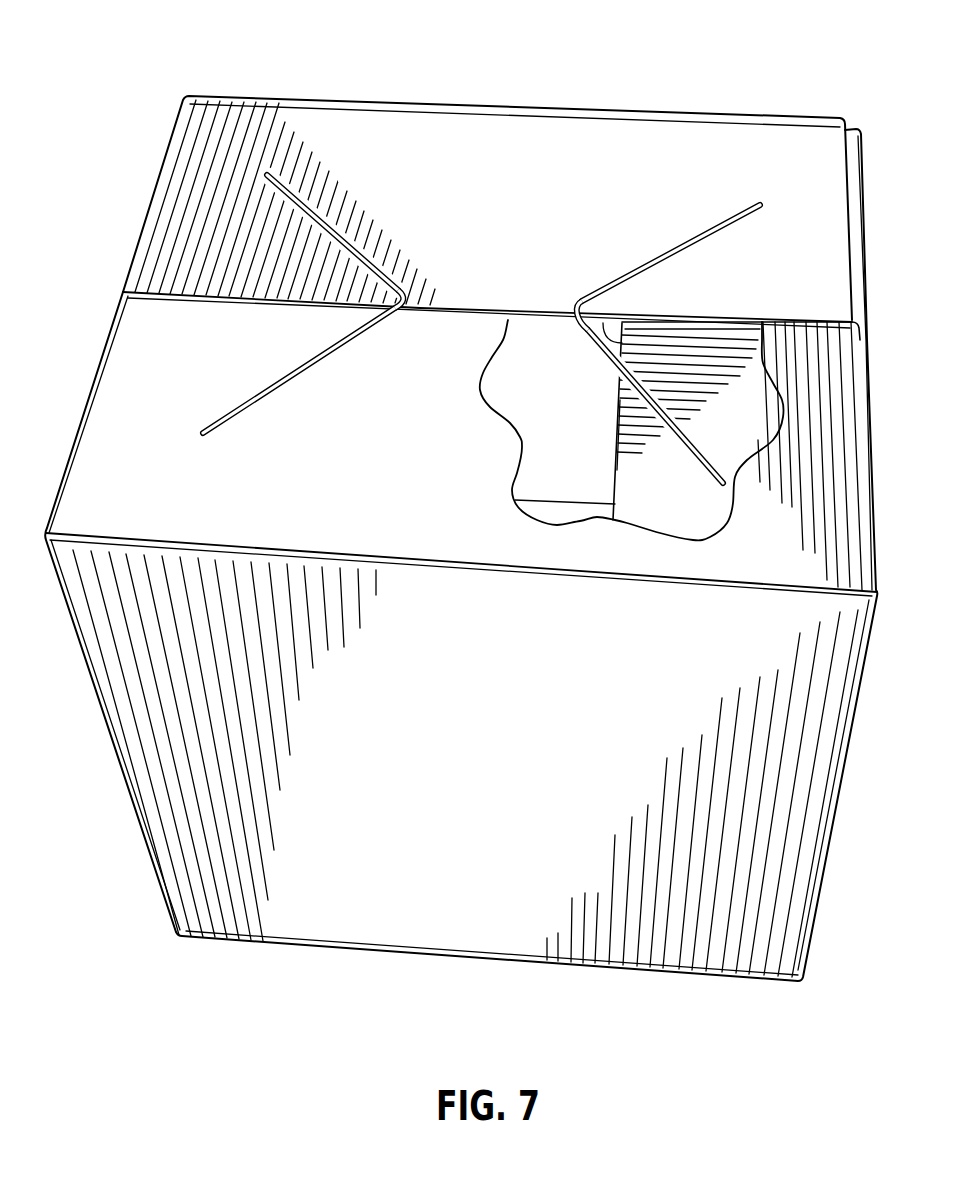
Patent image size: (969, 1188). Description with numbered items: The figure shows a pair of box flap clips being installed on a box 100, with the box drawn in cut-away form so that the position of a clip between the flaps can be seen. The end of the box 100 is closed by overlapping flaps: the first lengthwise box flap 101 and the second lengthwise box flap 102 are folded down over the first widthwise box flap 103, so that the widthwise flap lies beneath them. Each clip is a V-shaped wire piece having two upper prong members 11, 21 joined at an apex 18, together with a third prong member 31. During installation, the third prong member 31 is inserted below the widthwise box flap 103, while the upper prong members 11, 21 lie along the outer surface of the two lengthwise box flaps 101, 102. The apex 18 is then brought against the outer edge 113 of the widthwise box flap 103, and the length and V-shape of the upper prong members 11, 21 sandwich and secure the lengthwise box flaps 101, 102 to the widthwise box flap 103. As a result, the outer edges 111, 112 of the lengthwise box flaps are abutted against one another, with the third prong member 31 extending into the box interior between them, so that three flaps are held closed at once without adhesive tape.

The box 100 is at (491, 84).
The first lengthwise box flap 101 is at (523, 185).
The second lengthwise box flap 102 is at (775, 563).
The first widthwise box flap 103 is at (760, 428).
The outer edge of first lengthwise box flap 111 is at (687, 320).
The outer edge of second lengthwise box flap 112 is at (785, 317).
The outer edge of widthwise box flap 113 is at (628, 465).
The upper prong member 11 is at (329, 214).
The upper prong member 21 is at (684, 243).
The apex 18 is at (405, 300).
The third prong member 31 is at (628, 326).